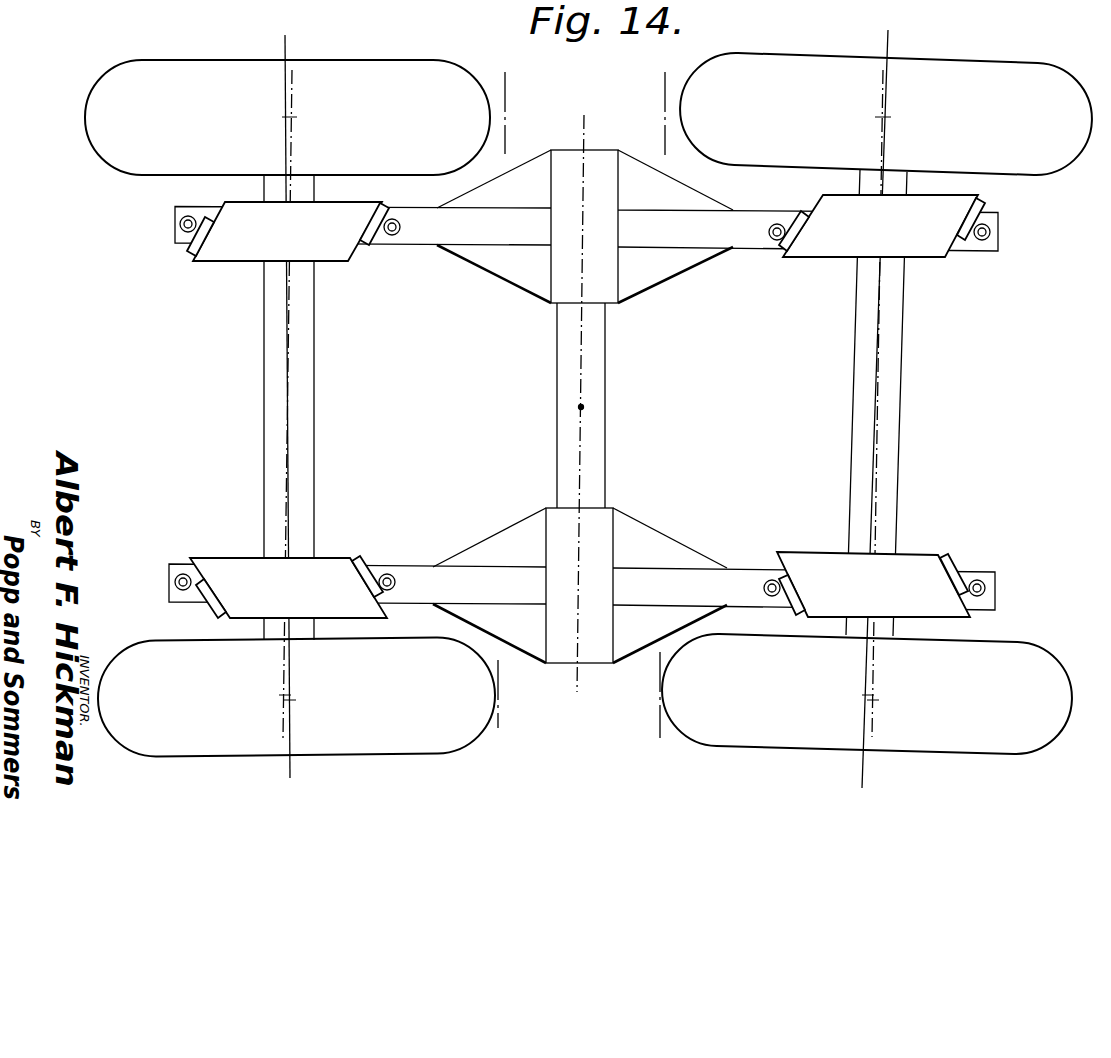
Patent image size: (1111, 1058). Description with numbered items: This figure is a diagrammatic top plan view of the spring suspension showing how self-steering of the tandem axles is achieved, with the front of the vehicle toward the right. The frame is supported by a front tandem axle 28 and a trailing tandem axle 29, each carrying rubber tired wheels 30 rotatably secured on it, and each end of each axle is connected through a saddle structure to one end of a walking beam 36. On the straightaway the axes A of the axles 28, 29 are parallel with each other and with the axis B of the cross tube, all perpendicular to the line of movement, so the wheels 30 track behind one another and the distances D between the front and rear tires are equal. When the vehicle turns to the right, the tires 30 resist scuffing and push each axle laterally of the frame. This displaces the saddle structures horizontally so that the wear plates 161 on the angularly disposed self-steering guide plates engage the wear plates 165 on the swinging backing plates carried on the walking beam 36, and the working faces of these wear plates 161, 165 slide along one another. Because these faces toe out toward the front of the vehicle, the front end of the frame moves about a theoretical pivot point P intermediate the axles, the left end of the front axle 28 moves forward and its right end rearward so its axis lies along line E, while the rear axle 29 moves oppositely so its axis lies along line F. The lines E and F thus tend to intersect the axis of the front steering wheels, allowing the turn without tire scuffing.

The front tandem axle 28 is at (904, 376).
The trailing tandem axle 29 is at (263, 382).
The rubber tired wheels 30 is at (116, 72).
The walking beam 36 is at (486, 252).
The wear plates 161 is at (194, 252).
The wear plates 165 is at (214, 234).
The axes of the axles A is at (298, 80).
The axis of the cross tube B is at (590, 366).
The distance lines D is at (507, 100).
The line of the front axle axis E is at (890, 38).
The line of the rear axle axis F is at (285, 36).
The theoretical pivot point P is at (581, 407).